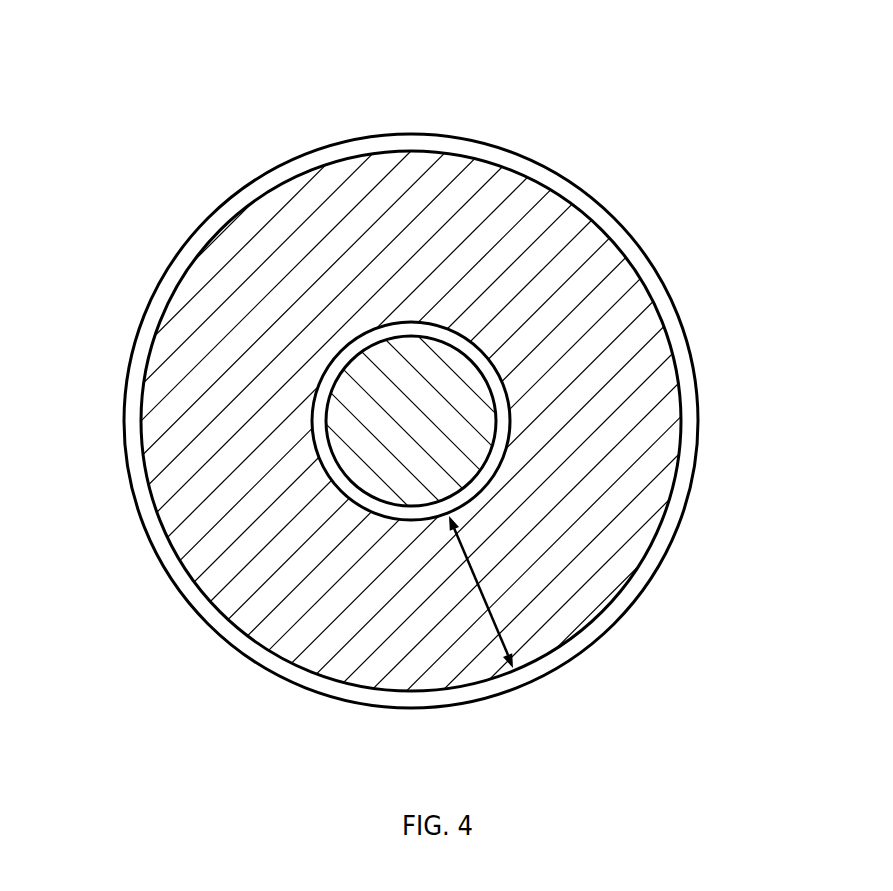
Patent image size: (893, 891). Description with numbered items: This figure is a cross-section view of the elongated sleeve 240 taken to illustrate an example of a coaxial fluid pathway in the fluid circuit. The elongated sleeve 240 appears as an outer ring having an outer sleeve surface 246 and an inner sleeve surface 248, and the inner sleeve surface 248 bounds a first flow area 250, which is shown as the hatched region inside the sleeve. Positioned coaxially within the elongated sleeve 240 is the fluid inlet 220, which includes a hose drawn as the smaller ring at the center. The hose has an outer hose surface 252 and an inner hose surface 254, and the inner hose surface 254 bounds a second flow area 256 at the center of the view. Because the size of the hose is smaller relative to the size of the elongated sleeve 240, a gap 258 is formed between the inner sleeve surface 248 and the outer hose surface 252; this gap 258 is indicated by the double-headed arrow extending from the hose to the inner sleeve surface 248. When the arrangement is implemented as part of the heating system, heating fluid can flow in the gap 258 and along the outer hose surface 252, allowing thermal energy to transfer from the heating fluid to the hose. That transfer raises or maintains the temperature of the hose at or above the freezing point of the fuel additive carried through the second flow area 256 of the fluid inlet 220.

The elongated sleeve 240 is at (190, 105).
The fluid inlet 220 is at (420, 405).
The outer sleeve surface 246 is at (566, 179).
The inner sleeve surface 248 is at (594, 227).
The first flow area 250 is at (449, 232).
The outer hose surface 252 is at (497, 363).
The inner hose surface 254 is at (496, 458).
The second flow area 256 is at (452, 417).
The gap 258 is at (483, 592).